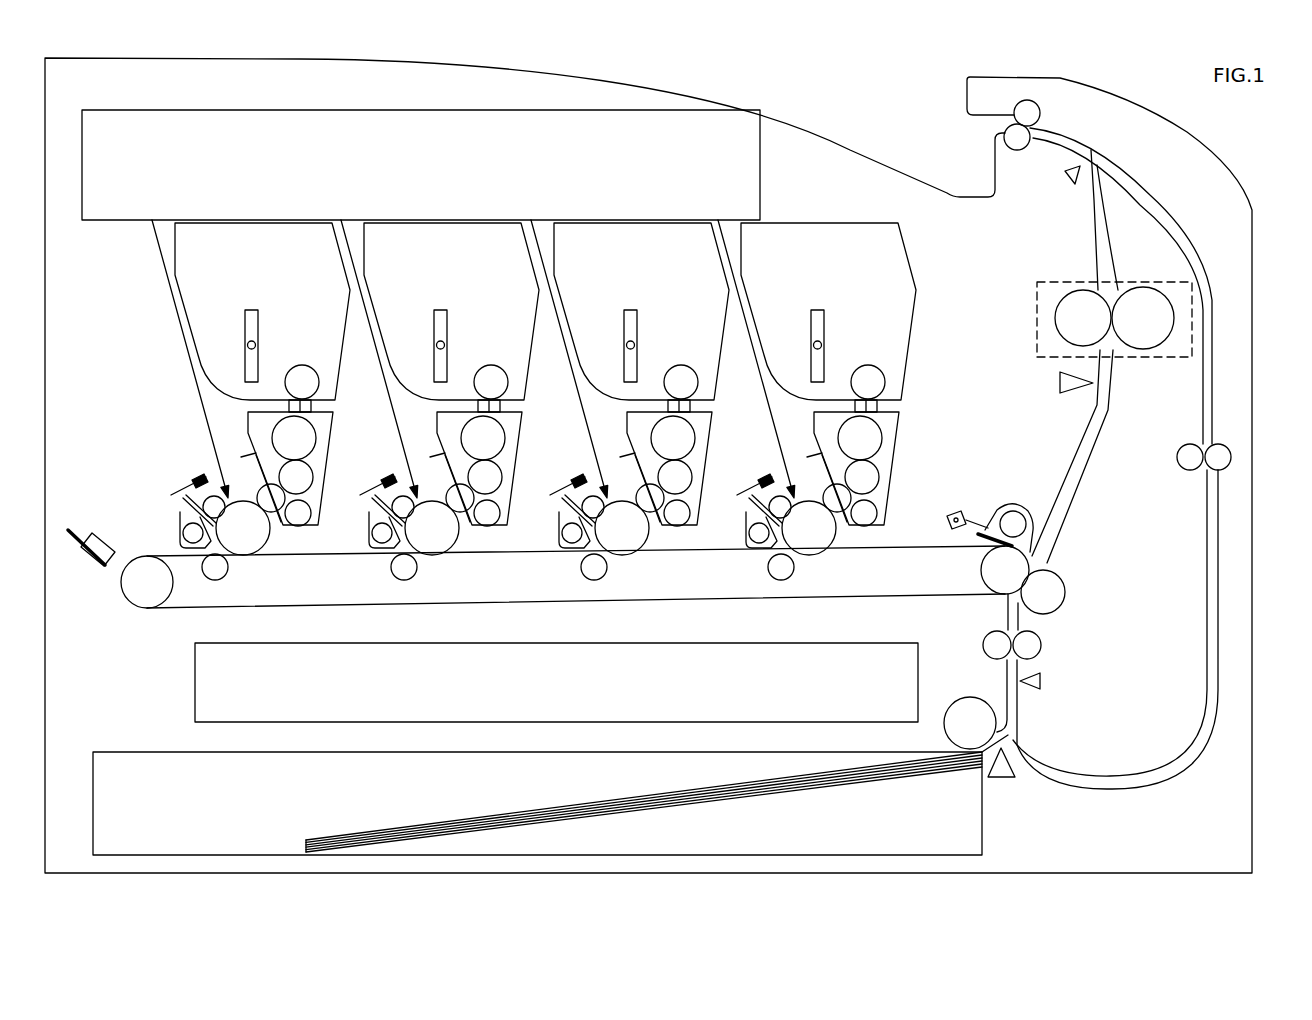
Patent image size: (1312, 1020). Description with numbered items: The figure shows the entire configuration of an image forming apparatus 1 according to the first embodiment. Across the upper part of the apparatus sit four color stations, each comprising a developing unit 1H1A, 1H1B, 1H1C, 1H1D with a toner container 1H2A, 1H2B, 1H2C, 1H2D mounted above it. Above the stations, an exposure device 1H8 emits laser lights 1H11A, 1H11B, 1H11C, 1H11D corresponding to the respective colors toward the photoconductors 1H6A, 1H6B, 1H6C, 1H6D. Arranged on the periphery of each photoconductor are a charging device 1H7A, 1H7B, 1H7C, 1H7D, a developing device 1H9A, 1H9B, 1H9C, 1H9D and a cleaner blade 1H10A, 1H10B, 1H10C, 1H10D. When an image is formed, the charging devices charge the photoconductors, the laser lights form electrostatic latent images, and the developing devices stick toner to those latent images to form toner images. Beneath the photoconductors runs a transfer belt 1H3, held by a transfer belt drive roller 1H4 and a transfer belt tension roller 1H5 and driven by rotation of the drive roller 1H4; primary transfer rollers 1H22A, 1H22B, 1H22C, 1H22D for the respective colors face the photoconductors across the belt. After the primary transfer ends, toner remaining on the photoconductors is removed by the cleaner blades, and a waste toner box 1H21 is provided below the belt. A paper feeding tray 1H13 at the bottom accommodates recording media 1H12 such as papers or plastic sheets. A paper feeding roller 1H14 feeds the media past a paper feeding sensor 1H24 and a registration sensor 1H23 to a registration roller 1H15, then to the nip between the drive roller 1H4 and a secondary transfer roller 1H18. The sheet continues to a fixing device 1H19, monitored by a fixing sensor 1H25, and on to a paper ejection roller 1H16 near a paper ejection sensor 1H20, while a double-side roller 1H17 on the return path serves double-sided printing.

The image forming apparatus 1 is at (366, 61).
The exposure device 1H8 is at (232, 110).
The laser light 1H11A is at (744, 336).
The laser light 1H11B is at (557, 336).
The laser light 1H11C is at (367, 336).
The laser light 1H11D is at (164, 238).
The toner container 1H2A is at (849, 323).
The toner container 1H2B is at (662, 323).
The toner container 1H2C is at (472, 323).
The toner container 1H2D is at (333, 398).
The developing unit 1H1A is at (881, 469).
The developing unit 1H1B is at (694, 469).
The developing unit 1H1C is at (504, 469).
The developing unit 1H1D is at (324, 476).
The developing device 1H9A is at (882, 510).
The developing device 1H9B is at (693, 510).
The developing device 1H9C is at (503, 510).
The developing device 1H9D is at (280, 505).
The charging device 1H7A is at (753, 485).
The charging device 1H7B is at (566, 485).
The charging device 1H7C is at (376, 485).
The charging device 1H7D is at (206, 476).
The cleaner blade 1H10A is at (730, 557).
The cleaner blade 1H10B is at (539, 557).
The cleaner blade 1H10C is at (349, 557).
The cleaner blade 1H10D is at (182, 514).
The photoconductor 1H6A is at (845, 529).
The photoconductor 1H6B is at (656, 529).
The photoconductor 1H6C is at (466, 529).
The photoconductor 1H6D is at (270, 540).
The primary transfer roller 1H22A is at (826, 567).
The primary transfer roller 1H22B is at (637, 567).
The primary transfer roller 1H22C is at (447, 567).
The primary transfer roller 1H22D is at (229, 568).
The transfer belt 1H3 is at (655, 599).
The transfer belt tension roller 1H5 is at (173, 582).
The transfer belt drive roller 1H4 is at (981, 572).
The secondary transfer roller 1H18 is at (1066, 594).
The fixing sensor 1H25 is at (1058, 383).
The fixing device 1H19 is at (1072, 280).
The paper ejection sensor 1H20 is at (1070, 182).
The paper ejection roller 1H16 is at (1041, 114).
The double-side roller 1H17 is at (1177, 458).
The registration roller 1H15 is at (983, 643).
The registration sensor 1H23 is at (1042, 682).
The paper feeding roller 1H14 is at (944, 723).
The paper feeding sensor 1H24 is at (1003, 778).
The paper feeding tray 1H13 is at (983, 835).
The recording media 1H12 is at (785, 800).
The waste toner box 1H21 is at (766, 643).